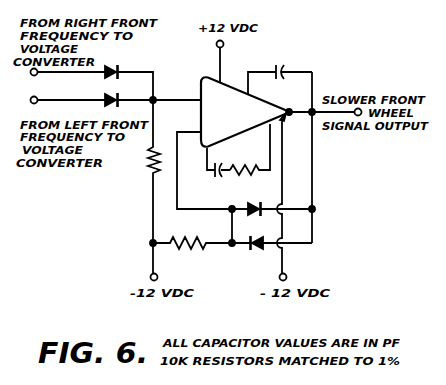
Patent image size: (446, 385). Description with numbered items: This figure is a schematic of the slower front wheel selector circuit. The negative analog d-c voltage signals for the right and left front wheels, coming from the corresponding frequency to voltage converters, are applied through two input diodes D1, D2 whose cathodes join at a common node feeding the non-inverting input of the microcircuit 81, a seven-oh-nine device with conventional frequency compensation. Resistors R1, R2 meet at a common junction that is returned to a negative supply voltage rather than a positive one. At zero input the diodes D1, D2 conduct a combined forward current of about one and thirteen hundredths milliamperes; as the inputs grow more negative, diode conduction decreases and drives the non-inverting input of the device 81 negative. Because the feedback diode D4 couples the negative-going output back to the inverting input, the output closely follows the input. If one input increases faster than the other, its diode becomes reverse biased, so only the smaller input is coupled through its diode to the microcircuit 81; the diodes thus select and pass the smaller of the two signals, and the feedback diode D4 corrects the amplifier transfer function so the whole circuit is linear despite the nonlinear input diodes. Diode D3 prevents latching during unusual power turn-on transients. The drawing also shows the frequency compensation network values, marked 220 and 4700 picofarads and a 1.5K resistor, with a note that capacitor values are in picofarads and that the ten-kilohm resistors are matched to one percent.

The diode D1 is at (124, 66).
The diode D2 is at (116, 94).
The diode D3 is at (253, 197).
The feedback diode D4 is at (257, 232).
The resistor R1 is at (146, 161).
The resistor R2 is at (203, 229).
The microcircuit 81 is at (272, 97).
The 220 pF capacitor 220 is at (285, 62).
The 4700 pF capacitor 4700 is at (224, 181).
The 1.5K resistor 1.5K is at (255, 165).